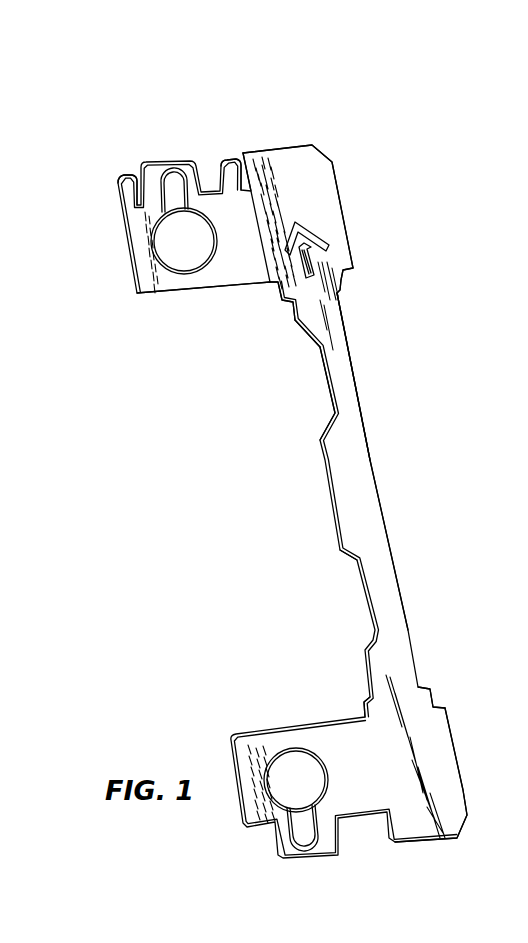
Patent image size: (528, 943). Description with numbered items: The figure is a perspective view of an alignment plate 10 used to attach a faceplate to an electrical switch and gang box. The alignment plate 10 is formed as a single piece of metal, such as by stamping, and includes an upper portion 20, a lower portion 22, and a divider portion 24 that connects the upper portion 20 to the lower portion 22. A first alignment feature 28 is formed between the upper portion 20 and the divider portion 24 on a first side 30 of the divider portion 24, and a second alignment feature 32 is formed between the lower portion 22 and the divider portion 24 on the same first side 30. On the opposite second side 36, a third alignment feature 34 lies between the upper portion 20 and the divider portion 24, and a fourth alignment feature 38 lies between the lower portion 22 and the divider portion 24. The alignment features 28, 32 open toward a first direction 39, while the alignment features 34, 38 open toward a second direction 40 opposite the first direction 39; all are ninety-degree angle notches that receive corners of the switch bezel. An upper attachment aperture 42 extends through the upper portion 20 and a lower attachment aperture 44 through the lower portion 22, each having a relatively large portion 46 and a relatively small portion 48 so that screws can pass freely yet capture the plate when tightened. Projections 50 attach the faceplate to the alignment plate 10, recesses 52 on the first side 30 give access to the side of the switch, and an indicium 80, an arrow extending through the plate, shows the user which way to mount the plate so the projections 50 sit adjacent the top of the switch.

The alignment plate 10 is at (293, 99).
The upper portion 20 is at (325, 188).
The lower portion 22 is at (445, 783).
The divider portion 24 is at (366, 489).
The first alignment feature 28 is at (268, 290).
The first side 30 is at (328, 493).
The second alignment feature 32 is at (362, 703).
The third alignment feature 34 is at (350, 283).
The second side 36 is at (368, 432).
The fourth alignment feature 38 is at (435, 708).
The first direction 39 is at (267, 372).
The second direction 40 is at (451, 353).
The upper attachment aperture 42 is at (190, 270).
The lower attachment aperture 44 is at (325, 768).
The relatively large portion 46 is at (160, 252).
The relatively small portion 48 is at (187, 172).
The projections 50 is at (123, 177).
The recesses 52 is at (322, 375).
The indicium 80 is at (312, 238).